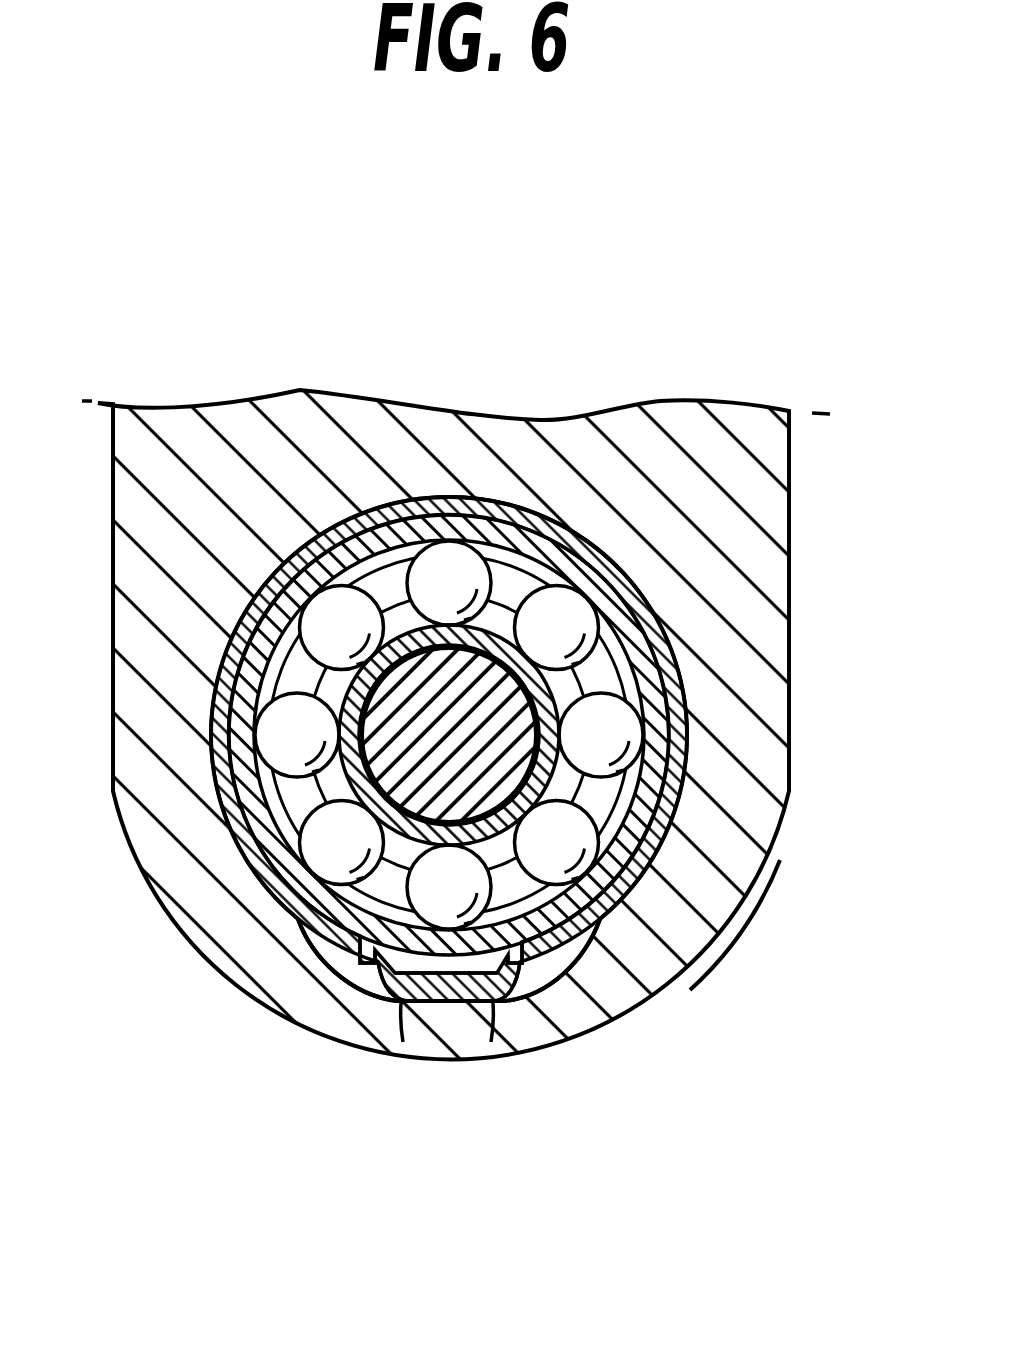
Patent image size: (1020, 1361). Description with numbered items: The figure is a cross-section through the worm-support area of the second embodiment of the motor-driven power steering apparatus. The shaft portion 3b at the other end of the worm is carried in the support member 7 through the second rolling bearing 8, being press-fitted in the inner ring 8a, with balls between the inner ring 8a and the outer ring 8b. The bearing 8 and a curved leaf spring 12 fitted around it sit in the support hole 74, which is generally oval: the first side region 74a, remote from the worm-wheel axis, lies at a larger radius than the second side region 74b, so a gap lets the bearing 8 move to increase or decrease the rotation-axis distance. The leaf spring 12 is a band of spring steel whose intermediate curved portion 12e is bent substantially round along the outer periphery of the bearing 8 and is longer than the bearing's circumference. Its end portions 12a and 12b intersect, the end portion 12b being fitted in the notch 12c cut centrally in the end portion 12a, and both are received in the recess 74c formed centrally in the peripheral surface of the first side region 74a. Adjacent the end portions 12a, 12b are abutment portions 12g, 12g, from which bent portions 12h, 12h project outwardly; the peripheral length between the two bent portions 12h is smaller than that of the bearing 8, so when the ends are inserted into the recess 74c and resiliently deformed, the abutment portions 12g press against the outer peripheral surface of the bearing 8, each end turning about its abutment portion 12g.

The curved leaf spring 12 is at (616, 930).
The end portion 12a is at (466, 1062).
The end portion 12b is at (392, 1058).
The notch 12c is at (335, 1008).
The curved portion 12e is at (430, 497).
The abutment portion 12g is at (526, 1030).
The bent portion 12h is at (545, 955).
The shaft portion 3b is at (525, 748).
The support member 7 is at (723, 949).
The second rolling bearing 8 is at (552, 736).
The inner ring 8a is at (588, 632).
The outer ring 8b is at (687, 842).
The support hole 74 is at (686, 700).
The first side region 74a is at (630, 946).
The second side region 74b is at (557, 520).
The recess 74c is at (545, 1010).